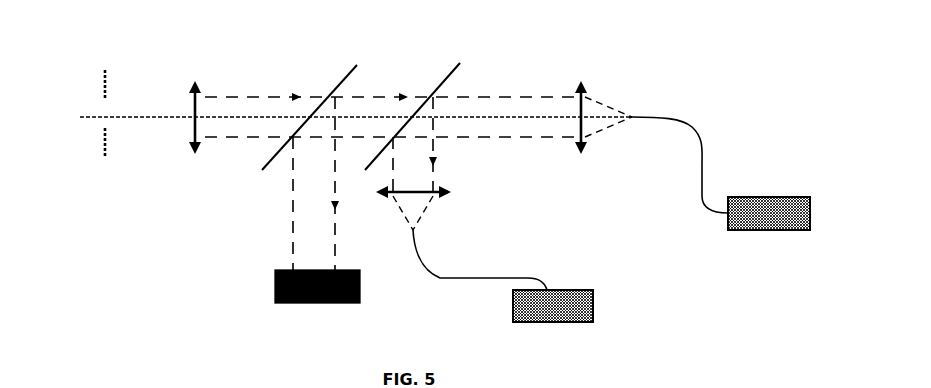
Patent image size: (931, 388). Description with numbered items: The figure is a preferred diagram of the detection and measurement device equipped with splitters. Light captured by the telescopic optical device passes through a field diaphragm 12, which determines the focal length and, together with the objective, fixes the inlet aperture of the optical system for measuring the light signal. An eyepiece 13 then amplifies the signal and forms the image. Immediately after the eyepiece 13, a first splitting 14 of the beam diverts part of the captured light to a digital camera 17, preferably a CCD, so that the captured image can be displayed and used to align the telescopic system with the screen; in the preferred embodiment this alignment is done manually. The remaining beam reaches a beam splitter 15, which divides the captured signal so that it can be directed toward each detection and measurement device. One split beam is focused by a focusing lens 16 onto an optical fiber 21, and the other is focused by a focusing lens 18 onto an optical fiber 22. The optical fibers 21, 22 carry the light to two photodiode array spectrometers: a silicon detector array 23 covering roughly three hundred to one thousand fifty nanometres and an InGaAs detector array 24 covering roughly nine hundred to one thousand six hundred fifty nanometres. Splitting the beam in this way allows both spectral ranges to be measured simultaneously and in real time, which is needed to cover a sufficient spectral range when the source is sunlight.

The field diaphragm 12 is at (105, 60).
The eyepiece 13 is at (198, 72).
The beam splitter for alignment 14 is at (335, 77).
The beam splitter 15 is at (447, 72).
The focusing lens 16 is at (575, 80).
The digital camera 17 is at (317, 298).
The focusing lens 18 is at (453, 190).
The optical fiber 21 is at (708, 168).
The optical fiber 22 is at (443, 270).
The silicon detector array spectrometer 23 is at (769, 225).
The InGaAs detector array spectrometer 24 is at (553, 318).